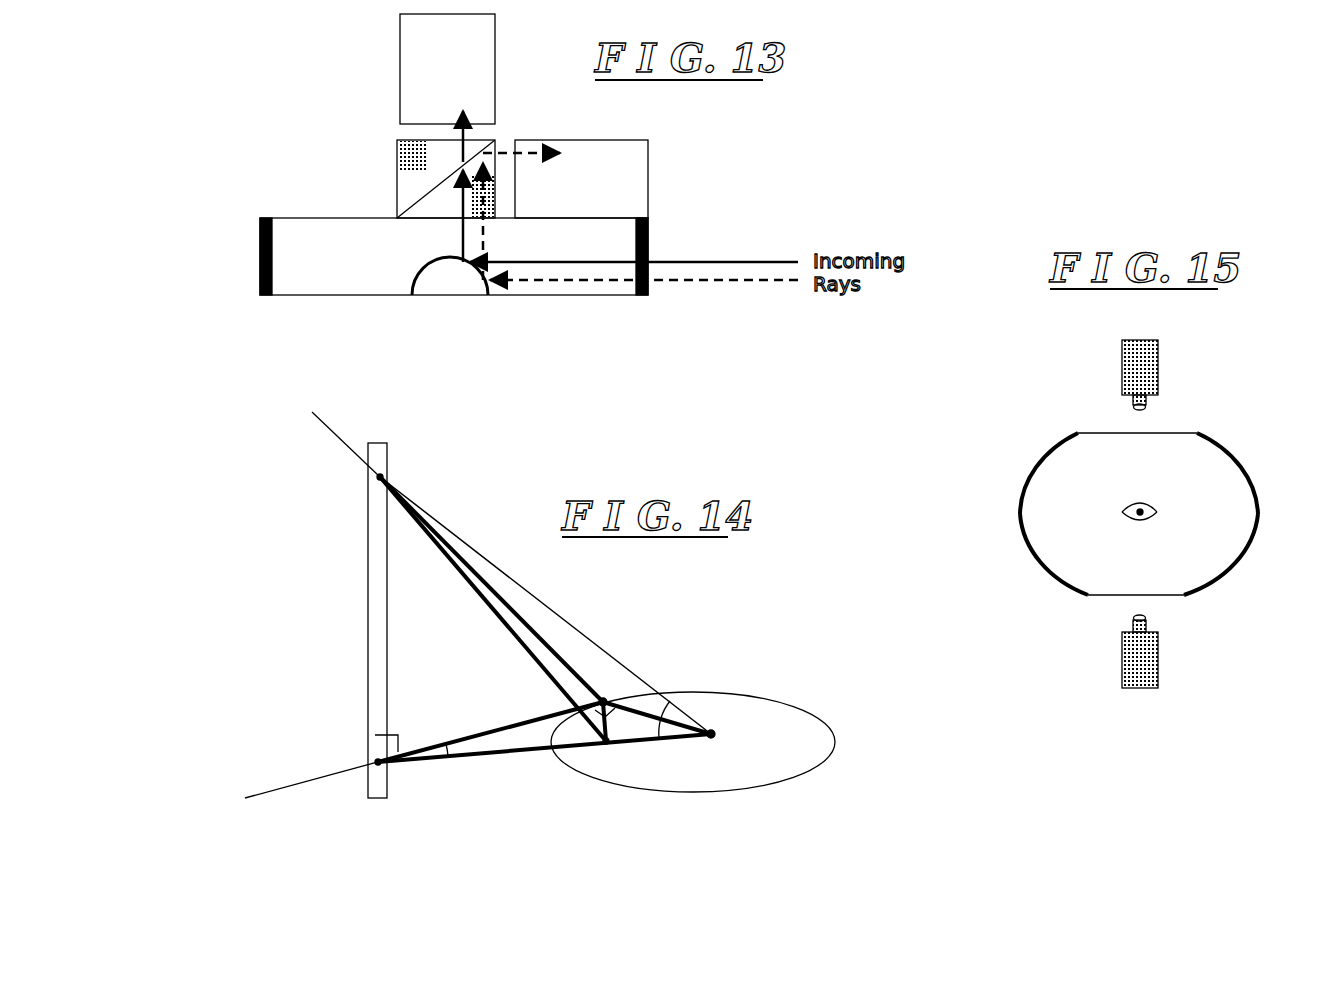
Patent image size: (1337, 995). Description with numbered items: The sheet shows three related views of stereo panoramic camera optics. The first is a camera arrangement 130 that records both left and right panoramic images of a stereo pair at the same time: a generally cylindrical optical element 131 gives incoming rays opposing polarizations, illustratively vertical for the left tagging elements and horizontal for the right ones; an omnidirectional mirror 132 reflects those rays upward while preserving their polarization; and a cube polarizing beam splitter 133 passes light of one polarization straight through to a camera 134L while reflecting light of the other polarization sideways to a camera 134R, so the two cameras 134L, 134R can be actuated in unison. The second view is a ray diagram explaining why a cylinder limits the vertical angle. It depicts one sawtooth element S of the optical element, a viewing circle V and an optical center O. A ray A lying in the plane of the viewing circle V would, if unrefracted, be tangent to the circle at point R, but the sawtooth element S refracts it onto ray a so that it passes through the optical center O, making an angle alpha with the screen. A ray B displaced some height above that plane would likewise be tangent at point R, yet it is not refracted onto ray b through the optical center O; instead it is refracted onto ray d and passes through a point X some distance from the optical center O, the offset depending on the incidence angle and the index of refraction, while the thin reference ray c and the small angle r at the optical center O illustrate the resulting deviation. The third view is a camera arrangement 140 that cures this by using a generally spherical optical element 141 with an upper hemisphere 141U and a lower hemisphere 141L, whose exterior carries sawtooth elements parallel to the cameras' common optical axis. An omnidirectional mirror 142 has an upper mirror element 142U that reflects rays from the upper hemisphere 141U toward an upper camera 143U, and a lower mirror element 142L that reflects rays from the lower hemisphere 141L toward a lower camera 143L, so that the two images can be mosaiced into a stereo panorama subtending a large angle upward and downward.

In FIG. 13, the camera arrangement 130 is at (309, 90).
In FIG. 13, the optical element 131 is at (260, 258).
In FIG. 13, the omnidirectional mirror 132 is at (412, 286).
In FIG. 13, the cube polarizing beam splitter 133 is at (397, 163).
In FIG. 13, the camera 134L is at (496, 56).
In FIG. 13, the camera 134R is at (648, 165).
In FIG. 14, the sawtooth element S is at (375, 624).
In FIG. 14, the ray A is at (375, 760).
In FIG. 14, the ray B is at (370, 470).
In FIG. 14, the optical center O is at (716, 735).
In FIG. 14, the point R is at (617, 690).
In FIG. 14, the point X is at (610, 744).
In FIG. 14, the viewing circle V is at (760, 698).
In FIG. 14, the ray a is at (495, 757).
In FIG. 14, the ray b is at (546, 644).
In FIG. 14, the ray c is at (564, 621).
In FIG. 14, the ray d is at (548, 673).
In FIG. 14, the angle r is at (628, 724).
In FIG. 14, the angle alpha is at (481, 741).
In FIG. 15, the camera arrangement 140 is at (988, 412).
In FIG. 15, the spherical optical element 141 is at (1148, 514).
In FIG. 15, the upper hemisphere of optical element 141U is at (1238, 459).
In FIG. 15, the lower hemisphere of optical element 141L is at (1247, 554).
In FIG. 15, the omnidirectional mirror 142 is at (1139, 519).
In FIG. 15, the upper mirror element 142U is at (1148, 504).
In FIG. 15, the lower mirror element 142L is at (1105, 545).
In FIG. 15, the upper camera 143U is at (1158, 358).
In FIG. 15, the lower camera 143L is at (1158, 656).